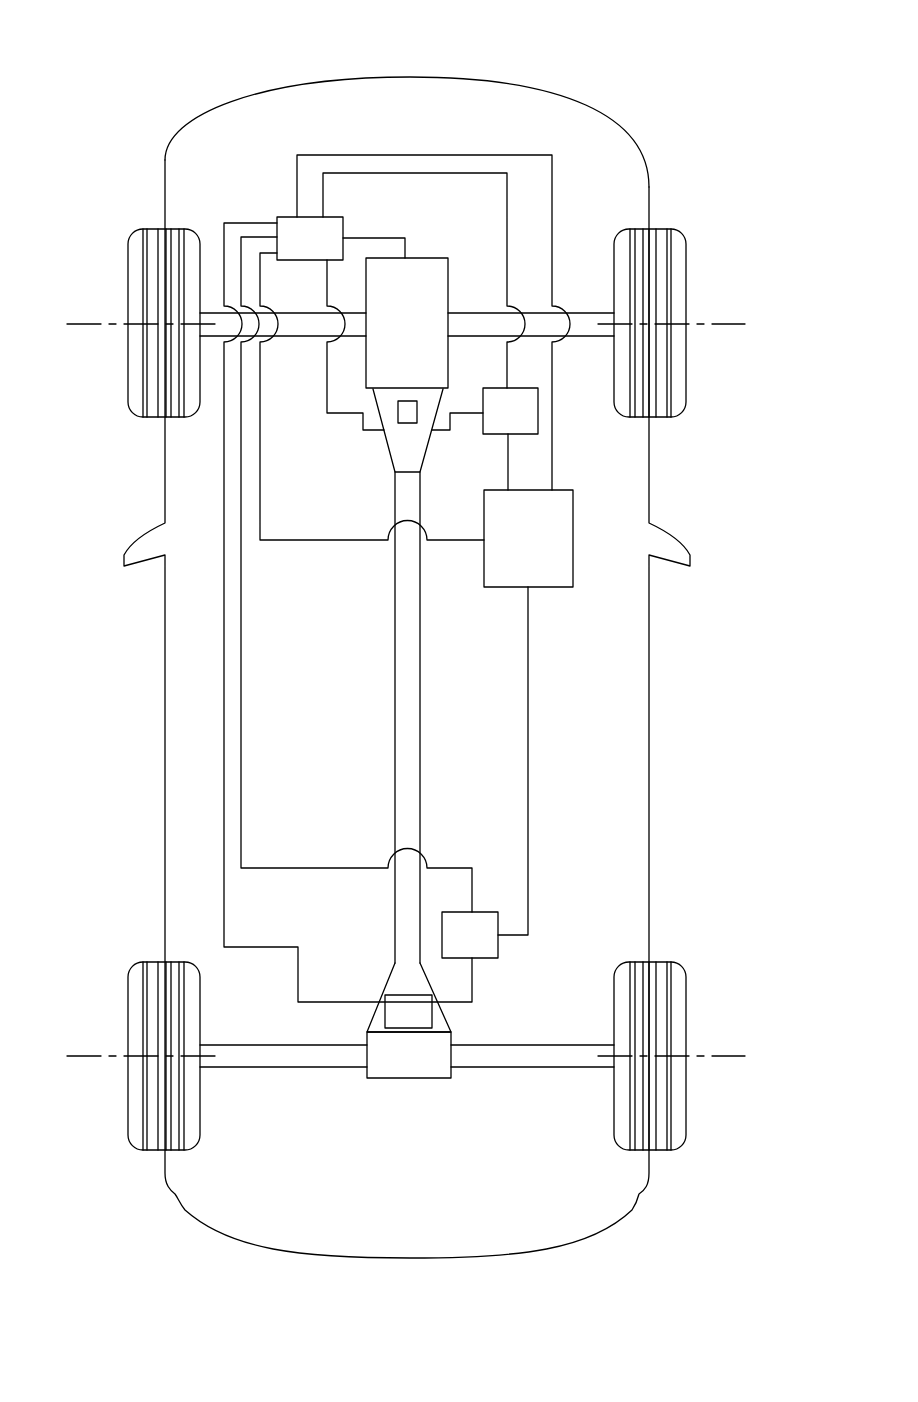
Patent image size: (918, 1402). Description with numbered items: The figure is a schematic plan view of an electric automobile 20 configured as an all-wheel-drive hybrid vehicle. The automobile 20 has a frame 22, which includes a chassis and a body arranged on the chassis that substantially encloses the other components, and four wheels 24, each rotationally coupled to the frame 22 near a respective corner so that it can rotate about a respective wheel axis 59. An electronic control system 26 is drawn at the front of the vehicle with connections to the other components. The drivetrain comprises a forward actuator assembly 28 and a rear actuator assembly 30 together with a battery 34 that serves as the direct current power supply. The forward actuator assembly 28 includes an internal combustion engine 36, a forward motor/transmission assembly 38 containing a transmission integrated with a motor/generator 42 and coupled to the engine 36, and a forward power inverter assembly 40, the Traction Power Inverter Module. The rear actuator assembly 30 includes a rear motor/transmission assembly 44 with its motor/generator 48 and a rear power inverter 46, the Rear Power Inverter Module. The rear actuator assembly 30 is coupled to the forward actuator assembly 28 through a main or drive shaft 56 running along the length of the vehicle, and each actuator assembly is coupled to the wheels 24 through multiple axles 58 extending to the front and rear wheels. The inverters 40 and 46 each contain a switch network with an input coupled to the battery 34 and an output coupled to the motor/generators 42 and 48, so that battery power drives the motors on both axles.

The automobile 20 is at (645, 97).
The frame 22 is at (420, 77).
The wheels 24 is at (128, 294).
The electronic control system 26 is at (327, 253).
The forward actuator assembly 28 is at (455, 297).
The rear actuator assembly 30 is at (467, 1026).
The battery 34 is at (545, 553).
The internal combustion engine 36 is at (424, 338).
The forward motor/transmission assembly 38 is at (433, 439).
The forward power inverter assembly 40 is at (527, 426).
The motor/generator 42 is at (398, 412).
The rear motor/transmission assembly 44 is at (387, 982).
The rear power inverter 46 is at (487, 950).
The motor/generator 48 is at (425, 1026).
The main shaft 56 is at (420, 710).
The axles 58 is at (290, 338).
The wheel axis 59 is at (88, 326).